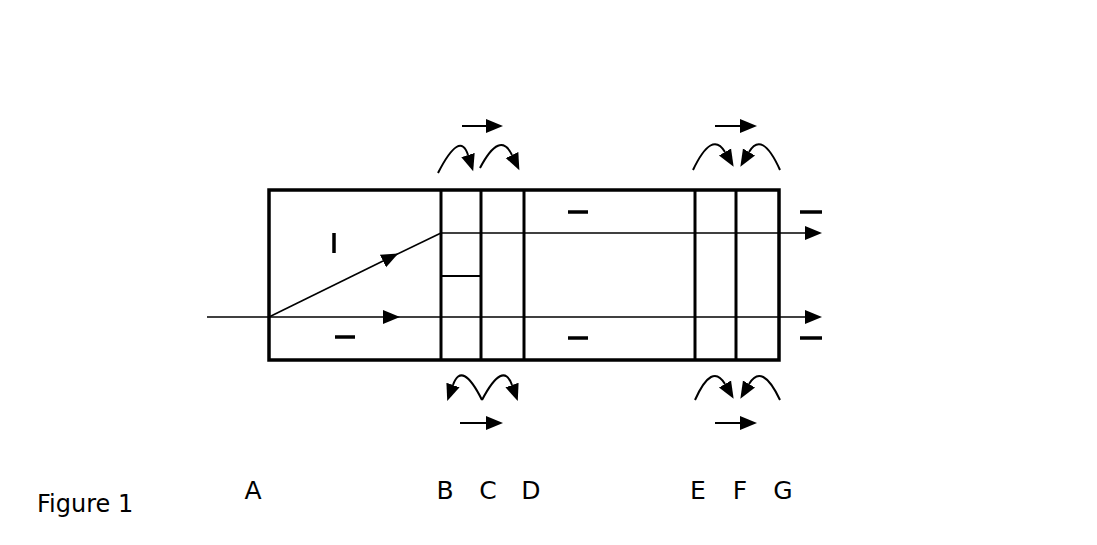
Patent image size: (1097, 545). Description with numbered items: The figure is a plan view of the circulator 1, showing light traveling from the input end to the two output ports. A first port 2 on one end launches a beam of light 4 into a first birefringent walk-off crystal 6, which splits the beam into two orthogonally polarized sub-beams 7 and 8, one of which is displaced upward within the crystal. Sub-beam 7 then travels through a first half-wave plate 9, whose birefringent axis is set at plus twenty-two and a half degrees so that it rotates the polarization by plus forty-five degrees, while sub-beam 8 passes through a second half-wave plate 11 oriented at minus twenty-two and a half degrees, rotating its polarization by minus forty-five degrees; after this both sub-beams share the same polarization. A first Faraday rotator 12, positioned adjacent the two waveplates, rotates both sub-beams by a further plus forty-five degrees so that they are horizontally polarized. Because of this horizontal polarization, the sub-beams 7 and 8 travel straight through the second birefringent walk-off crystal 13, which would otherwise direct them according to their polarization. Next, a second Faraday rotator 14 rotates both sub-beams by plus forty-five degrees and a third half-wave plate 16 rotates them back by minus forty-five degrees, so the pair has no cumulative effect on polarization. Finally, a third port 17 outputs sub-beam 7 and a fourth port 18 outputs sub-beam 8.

The circulator 1 is at (300, 73).
The first port 2 is at (269, 317).
The beam of light 4 is at (230, 318).
The first birefringent walk-off crystal 6 is at (309, 190).
The sub-beam 7 is at (333, 282).
The sub-beam 8 is at (333, 318).
The first half-wave plate 9 is at (440, 190).
The second half-wave plate 11 is at (441, 338).
The first Faraday rotator 12 is at (520, 190).
The second birefringent walk-off crystal 13 is at (590, 190).
The second Faraday rotator 14 is at (693, 190).
The third half-wave plate 16 is at (782, 190).
The third port 17 is at (779, 235).
The fourth port 18 is at (779, 317).